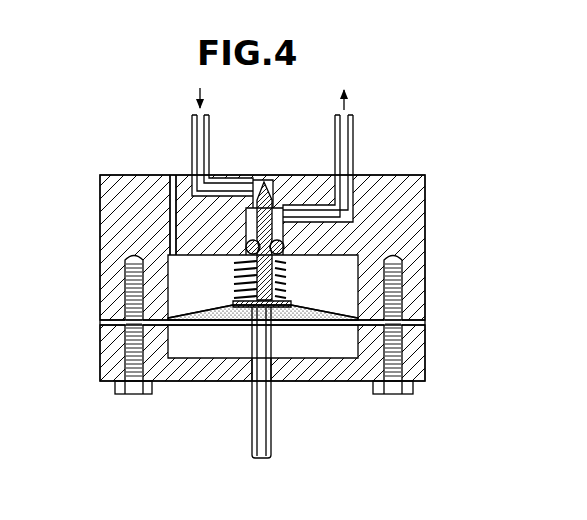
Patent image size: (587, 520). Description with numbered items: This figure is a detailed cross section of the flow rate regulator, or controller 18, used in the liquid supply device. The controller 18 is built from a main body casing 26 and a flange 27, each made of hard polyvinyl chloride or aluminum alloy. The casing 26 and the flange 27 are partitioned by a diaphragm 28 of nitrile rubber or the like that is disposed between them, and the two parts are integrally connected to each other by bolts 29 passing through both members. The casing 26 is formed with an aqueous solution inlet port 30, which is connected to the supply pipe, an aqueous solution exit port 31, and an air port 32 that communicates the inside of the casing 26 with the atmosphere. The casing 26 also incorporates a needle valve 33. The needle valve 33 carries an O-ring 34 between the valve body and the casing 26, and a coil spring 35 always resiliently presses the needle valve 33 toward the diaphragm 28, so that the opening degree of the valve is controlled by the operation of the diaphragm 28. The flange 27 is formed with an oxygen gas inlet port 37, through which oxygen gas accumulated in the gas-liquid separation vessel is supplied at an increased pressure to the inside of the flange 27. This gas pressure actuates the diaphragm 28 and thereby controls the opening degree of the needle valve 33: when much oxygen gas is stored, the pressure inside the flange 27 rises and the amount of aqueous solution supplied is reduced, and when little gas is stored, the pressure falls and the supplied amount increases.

The controller 18 is at (425, 158).
The main body casing 26 is at (118, 237).
The flange 27 is at (418, 350).
The diaphragm 28 is at (219, 322).
The bolts 29 is at (129, 394).
The aqueous solution inlet port 30 is at (209, 133).
The aqueous solution exit port 31 is at (353, 133).
The air port 32 is at (173, 185).
The needle valve 33 is at (265, 188).
The O-ring 34 is at (283, 252).
The coil spring 35 is at (236, 283).
The oxygen gas inlet port 37 is at (262, 427).